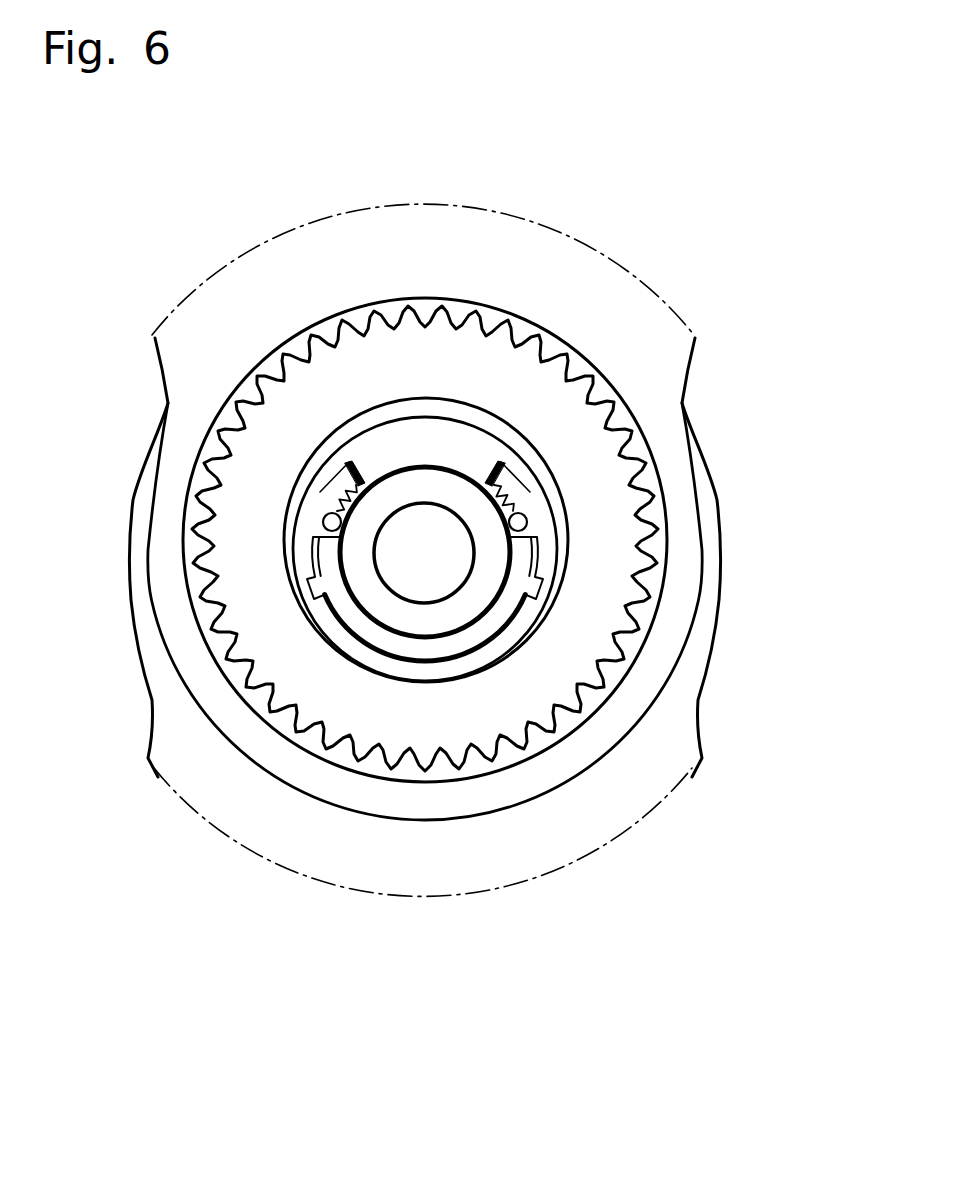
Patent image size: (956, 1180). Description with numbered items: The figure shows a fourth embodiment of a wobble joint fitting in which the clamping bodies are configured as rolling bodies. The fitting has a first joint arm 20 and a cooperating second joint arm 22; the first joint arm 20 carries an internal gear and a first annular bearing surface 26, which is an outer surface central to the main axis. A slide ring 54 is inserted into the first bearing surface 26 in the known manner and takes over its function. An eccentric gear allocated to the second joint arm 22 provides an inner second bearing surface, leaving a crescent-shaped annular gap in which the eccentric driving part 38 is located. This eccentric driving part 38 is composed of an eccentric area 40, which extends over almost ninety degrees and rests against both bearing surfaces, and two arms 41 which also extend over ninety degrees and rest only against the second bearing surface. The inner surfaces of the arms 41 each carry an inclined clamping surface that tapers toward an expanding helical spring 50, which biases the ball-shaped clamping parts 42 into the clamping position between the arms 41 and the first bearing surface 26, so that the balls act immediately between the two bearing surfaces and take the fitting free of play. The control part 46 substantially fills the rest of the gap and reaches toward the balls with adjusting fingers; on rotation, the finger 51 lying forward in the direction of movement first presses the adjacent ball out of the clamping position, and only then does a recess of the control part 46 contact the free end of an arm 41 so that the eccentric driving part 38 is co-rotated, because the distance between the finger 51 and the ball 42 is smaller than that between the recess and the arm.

The first joint arm 20 is at (573, 287).
The second joint arm 22 is at (365, 848).
The first annular bearing surface 26 is at (337, 436).
The eccentric driving part 38 is at (515, 465).
The eccentric area 40 is at (440, 440).
The arms 41 is at (330, 526).
The clamping parts 42 is at (524, 523).
The control part 46 is at (450, 637).
The spring 50 is at (517, 500).
The finger 51 is at (328, 560).
The slide ring 54 is at (396, 410).